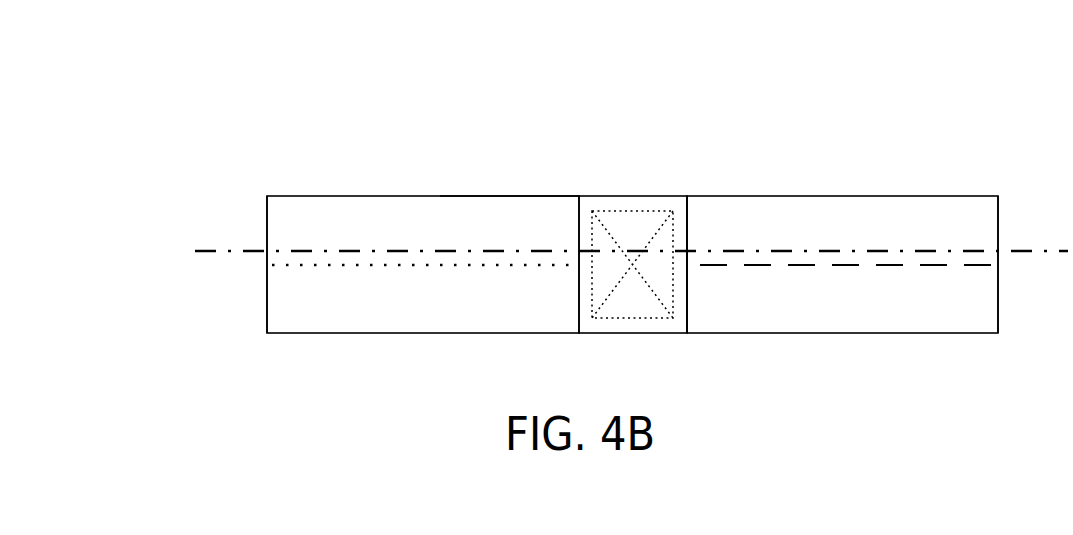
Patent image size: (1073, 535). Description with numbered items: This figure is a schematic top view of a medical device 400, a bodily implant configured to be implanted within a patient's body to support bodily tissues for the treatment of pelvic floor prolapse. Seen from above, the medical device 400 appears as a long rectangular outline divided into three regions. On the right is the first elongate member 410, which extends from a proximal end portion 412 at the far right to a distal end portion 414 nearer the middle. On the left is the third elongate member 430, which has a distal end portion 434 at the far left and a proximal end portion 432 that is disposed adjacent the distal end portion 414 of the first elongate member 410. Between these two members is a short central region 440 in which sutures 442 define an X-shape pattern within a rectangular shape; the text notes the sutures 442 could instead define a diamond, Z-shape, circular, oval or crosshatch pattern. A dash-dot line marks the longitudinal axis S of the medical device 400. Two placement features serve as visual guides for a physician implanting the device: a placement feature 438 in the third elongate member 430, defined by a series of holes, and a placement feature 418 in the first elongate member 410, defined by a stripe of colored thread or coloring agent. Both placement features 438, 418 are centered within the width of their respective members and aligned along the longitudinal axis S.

The medical device 400 is at (648, 170).
The first elongate member 410 is at (837, 222).
The proximal end portion 412 is at (945, 175).
The distal end portion 414 is at (717, 155).
The placement feature 418 is at (892, 265).
The third elongate member 430 is at (447, 222).
The proximal end portion 432 is at (547, 185).
The distal end portion 434 is at (292, 175).
The placement feature 438 is at (376, 265).
The joint section 440 is at (612, 183).
The sutures 442 is at (642, 209).
The longitudinal axis S is at (607, 251).